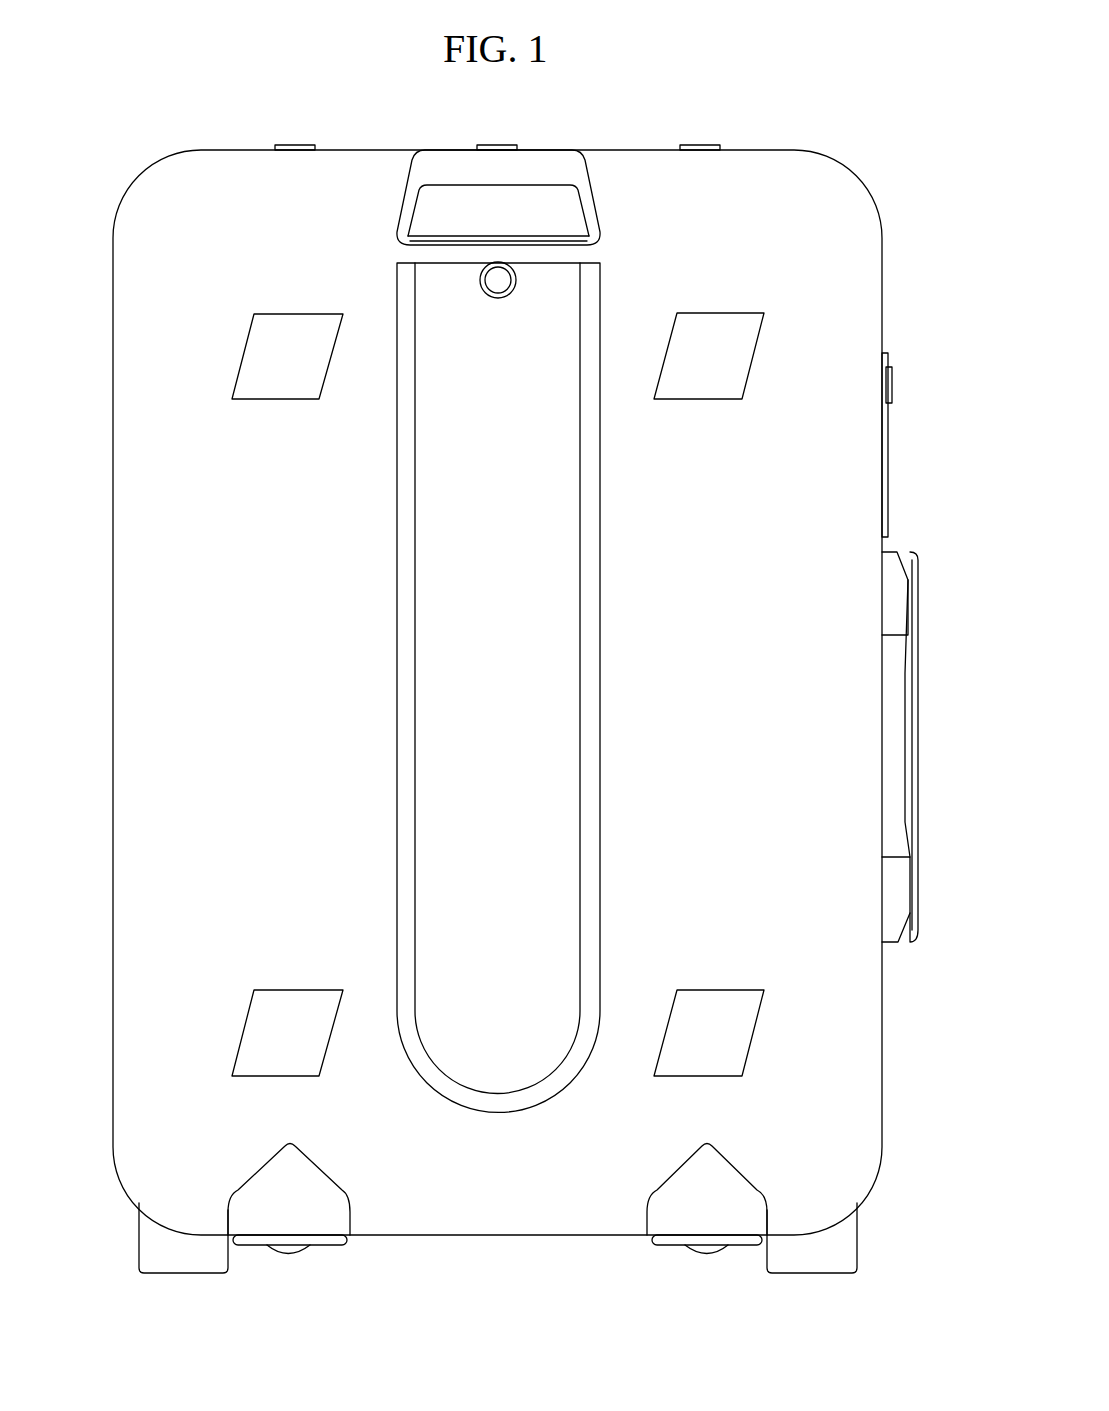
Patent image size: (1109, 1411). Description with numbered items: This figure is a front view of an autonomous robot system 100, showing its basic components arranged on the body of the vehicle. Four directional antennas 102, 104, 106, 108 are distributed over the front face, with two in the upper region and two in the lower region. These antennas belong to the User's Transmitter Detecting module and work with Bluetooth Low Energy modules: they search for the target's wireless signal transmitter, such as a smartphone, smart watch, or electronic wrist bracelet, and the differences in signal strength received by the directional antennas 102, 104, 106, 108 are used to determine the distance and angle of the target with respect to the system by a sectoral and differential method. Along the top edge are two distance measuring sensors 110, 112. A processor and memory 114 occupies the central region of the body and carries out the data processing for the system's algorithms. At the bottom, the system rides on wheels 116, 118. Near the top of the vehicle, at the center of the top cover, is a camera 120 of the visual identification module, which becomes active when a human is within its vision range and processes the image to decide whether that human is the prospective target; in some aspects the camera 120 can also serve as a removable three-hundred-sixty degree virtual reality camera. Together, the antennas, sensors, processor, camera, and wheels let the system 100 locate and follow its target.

The autonomous robot system 100 is at (880, 100).
The directional antenna 102 is at (297, 314).
The directional antenna 104 is at (697, 313).
The directional antenna 106 is at (297, 990).
The directional antenna 108 is at (753, 1031).
The distance measuring sensor 110 is at (290, 145).
The distance measuring sensor 112 is at (700, 145).
The processor and memory 114 is at (460, 470).
The wheel 116 is at (183, 1262).
The wheel 118 is at (812, 1262).
The camera 120 is at (498, 262).